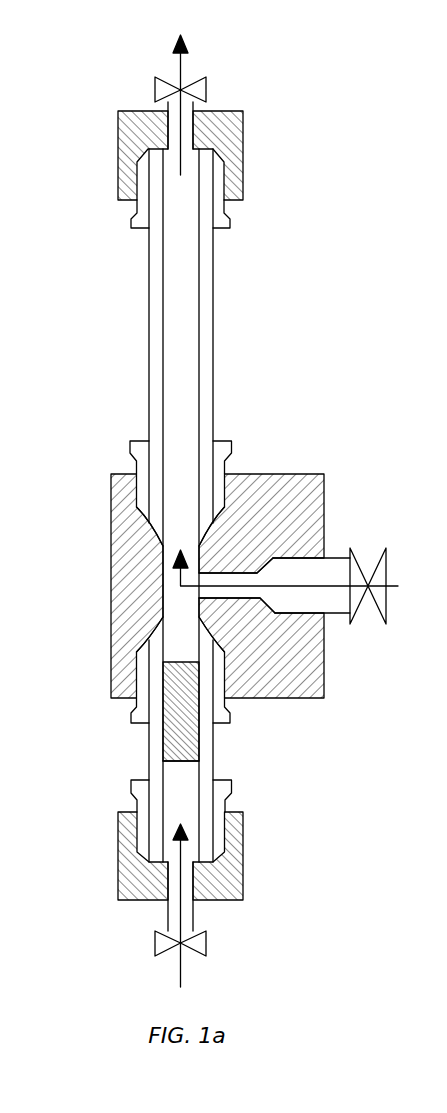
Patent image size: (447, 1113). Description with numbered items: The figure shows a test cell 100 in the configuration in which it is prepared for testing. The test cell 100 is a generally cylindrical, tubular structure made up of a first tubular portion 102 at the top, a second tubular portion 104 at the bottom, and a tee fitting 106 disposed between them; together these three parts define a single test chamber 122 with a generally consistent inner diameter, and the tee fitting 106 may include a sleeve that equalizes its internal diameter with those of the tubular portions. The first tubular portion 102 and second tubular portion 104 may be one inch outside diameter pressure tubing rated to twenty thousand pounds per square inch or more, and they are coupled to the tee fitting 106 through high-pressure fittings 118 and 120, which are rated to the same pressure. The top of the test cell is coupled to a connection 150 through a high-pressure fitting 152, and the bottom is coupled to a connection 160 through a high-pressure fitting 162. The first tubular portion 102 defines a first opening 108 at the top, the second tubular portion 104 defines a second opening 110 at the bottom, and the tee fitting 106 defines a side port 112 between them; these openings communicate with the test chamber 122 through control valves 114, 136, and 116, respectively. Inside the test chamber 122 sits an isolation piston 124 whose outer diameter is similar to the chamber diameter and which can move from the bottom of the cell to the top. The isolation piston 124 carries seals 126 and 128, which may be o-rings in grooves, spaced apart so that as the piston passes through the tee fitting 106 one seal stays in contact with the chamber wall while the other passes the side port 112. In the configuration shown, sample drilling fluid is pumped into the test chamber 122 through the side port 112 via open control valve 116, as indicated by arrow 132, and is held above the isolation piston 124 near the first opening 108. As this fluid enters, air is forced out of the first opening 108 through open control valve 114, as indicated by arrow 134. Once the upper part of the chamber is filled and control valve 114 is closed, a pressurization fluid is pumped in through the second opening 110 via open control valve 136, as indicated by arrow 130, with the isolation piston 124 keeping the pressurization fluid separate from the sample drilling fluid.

The test cell 100 is at (231, 510).
The first tubular portion 102 is at (215, 352).
The second tubular portion 104 is at (215, 770).
The tee fitting 106 is at (330, 493).
The first opening 108 is at (160, 146).
The second opening 110 is at (170, 858).
The side port 112 is at (220, 571).
The control valve 114 is at (155, 77).
The control valve 116 is at (359, 628).
The high-pressure fitting 118 is at (130, 440).
The high-pressure fitting 120 is at (138, 650).
The test chamber 122 is at (174, 328).
The isolation piston 124 is at (160, 724).
The seal 126 is at (160, 670).
The seal 128 is at (197, 752).
The arrow 130 is at (176, 974).
The arrow 132 is at (332, 583).
The arrow 134 is at (183, 175).
The control valve 136 is at (209, 956).
The connection 150 is at (117, 177).
The high-pressure fitting 152 is at (233, 218).
The connection 160 is at (245, 882).
The high-pressure fitting 162 is at (233, 792).